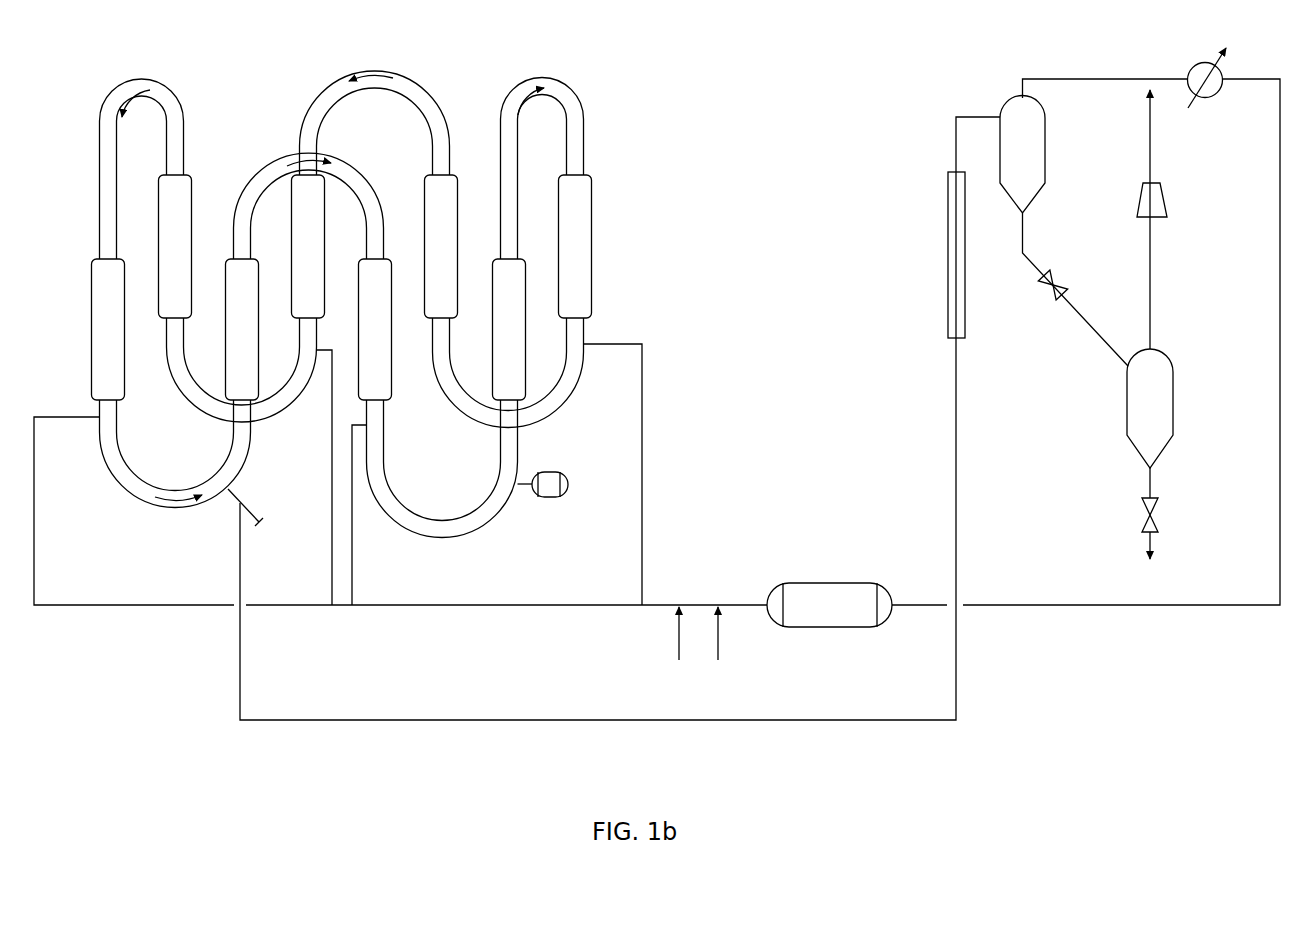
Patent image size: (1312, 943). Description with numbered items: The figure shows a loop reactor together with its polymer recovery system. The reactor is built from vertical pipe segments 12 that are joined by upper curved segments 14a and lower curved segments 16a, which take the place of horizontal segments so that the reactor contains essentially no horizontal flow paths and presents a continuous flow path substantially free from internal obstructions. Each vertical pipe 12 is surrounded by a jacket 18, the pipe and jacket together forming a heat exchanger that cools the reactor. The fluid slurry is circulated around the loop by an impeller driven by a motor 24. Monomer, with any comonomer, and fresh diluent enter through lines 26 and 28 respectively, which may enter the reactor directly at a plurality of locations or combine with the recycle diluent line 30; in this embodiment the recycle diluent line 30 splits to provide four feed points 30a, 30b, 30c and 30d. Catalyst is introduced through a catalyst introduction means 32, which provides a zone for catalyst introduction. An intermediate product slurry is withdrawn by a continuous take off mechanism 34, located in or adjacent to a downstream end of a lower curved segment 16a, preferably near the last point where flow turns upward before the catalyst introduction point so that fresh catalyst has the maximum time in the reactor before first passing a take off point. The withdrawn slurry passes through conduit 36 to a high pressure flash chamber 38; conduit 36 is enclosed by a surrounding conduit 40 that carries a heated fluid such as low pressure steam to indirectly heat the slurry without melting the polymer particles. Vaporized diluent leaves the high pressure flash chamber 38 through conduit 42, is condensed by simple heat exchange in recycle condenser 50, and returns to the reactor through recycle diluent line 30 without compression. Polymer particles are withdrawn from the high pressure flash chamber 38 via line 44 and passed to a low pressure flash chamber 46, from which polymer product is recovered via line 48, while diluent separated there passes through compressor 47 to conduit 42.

The vertical segment 12 is at (108, 467).
The upper curved segment 14a is at (380, 71).
The lower curved segment 16a is at (547, 415).
The jacket 18 is at (92, 274).
The motor 24 is at (550, 498).
The monomer line 26 is at (748, 640).
The fresh diluent line 28 is at (702, 652).
The recycle diluent line 30 is at (596, 591).
The feed point 30a is at (140, 609).
The feed point 30b is at (388, 515).
The feed point 30c is at (646, 474).
The feed point 30d is at (299, 477).
The catalyst introduction means 32 is at (400, 503).
The continuous take off mechanism 34 is at (237, 488).
The conduit 36 is at (620, 418).
The high pressure flash chamber 38 is at (1039, 156).
The surrounding conduit 40 is at (924, 250).
The conduit 42 is at (1121, 319).
The line 44 is at (1076, 289).
The low pressure flash chamber 46 is at (1167, 414).
The compressor 47 is at (1174, 219).
The line 48 is at (1176, 518).
The recycle condenser 50 is at (1190, 66).